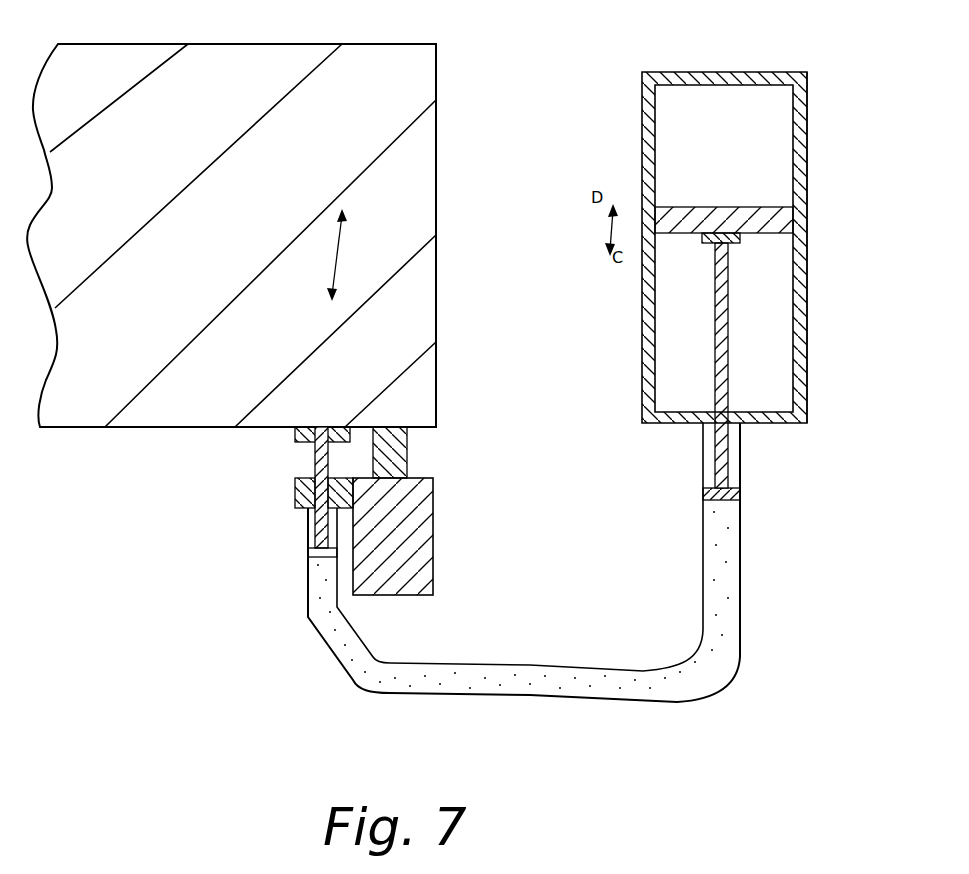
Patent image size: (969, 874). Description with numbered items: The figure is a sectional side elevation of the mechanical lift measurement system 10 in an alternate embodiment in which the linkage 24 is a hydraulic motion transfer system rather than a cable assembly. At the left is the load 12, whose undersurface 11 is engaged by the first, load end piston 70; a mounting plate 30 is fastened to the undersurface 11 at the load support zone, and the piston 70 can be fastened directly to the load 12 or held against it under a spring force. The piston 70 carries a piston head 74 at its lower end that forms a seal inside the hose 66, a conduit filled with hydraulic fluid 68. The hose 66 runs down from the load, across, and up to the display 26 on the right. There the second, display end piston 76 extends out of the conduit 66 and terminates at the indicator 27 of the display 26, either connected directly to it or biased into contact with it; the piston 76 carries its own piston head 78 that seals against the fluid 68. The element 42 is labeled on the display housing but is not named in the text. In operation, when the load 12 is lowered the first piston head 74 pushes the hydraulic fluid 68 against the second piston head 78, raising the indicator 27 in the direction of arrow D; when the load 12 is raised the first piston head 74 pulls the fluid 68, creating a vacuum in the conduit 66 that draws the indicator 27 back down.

The mechanical lift measurement system 10 is at (560, 262).
The undersurface 11 is at (142, 430).
The load 12 is at (442, 183).
The linkage 24 is at (472, 428).
The display 26 is at (746, 68).
The indicator 27 is at (753, 208).
The mounting plate 30 is at (293, 432).
The cylinder wall 42 is at (807, 263).
The hose 66 is at (497, 700).
The fluid 68 is at (580, 706).
The first piston 70 is at (315, 458).
The piston head 74 is at (313, 568).
The second piston 76 is at (728, 332).
The piston head 78 is at (723, 501).